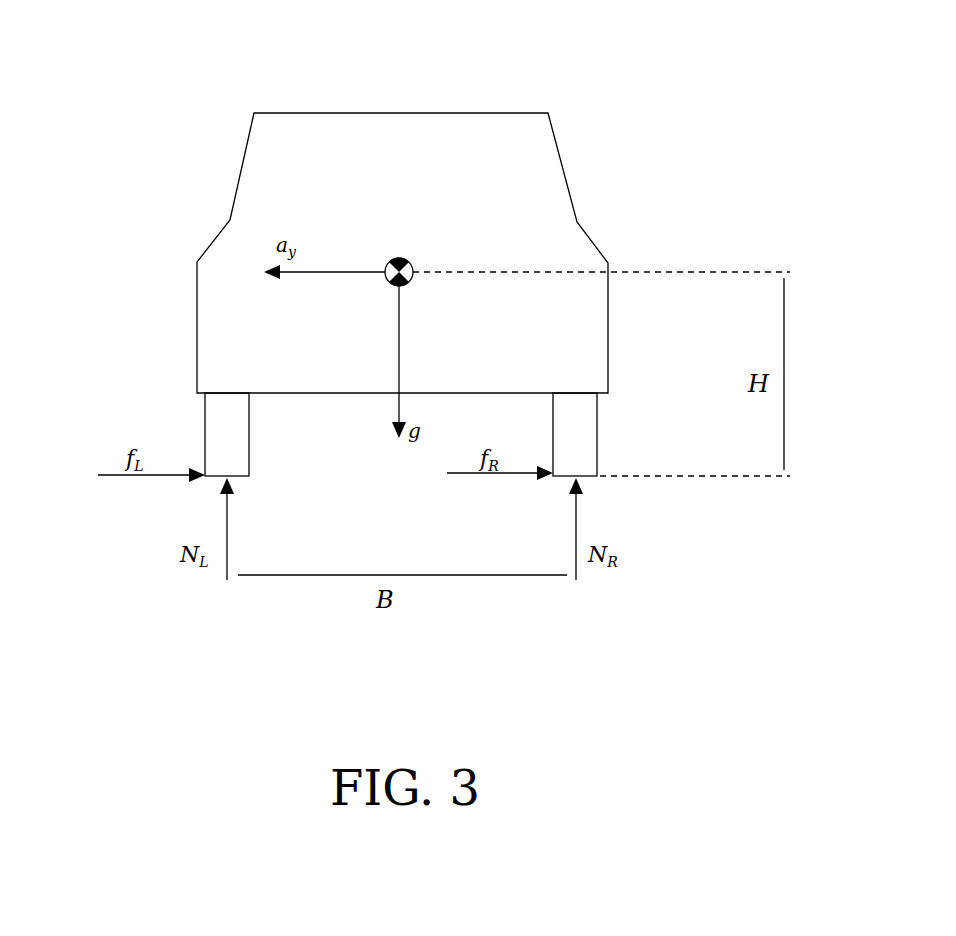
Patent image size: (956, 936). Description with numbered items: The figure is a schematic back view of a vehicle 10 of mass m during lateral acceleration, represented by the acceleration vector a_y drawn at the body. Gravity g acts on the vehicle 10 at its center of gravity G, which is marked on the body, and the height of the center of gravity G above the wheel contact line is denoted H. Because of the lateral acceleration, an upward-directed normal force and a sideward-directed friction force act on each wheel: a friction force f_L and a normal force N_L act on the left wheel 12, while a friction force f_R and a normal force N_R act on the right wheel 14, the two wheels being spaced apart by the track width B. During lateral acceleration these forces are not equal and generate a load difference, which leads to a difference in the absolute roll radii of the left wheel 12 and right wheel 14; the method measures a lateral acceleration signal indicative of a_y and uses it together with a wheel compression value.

The vehicle 10 is at (184, 106).
The left wheel 12 is at (182, 437).
The right wheel 14 is at (608, 439).
The center of gravity G is at (423, 255).